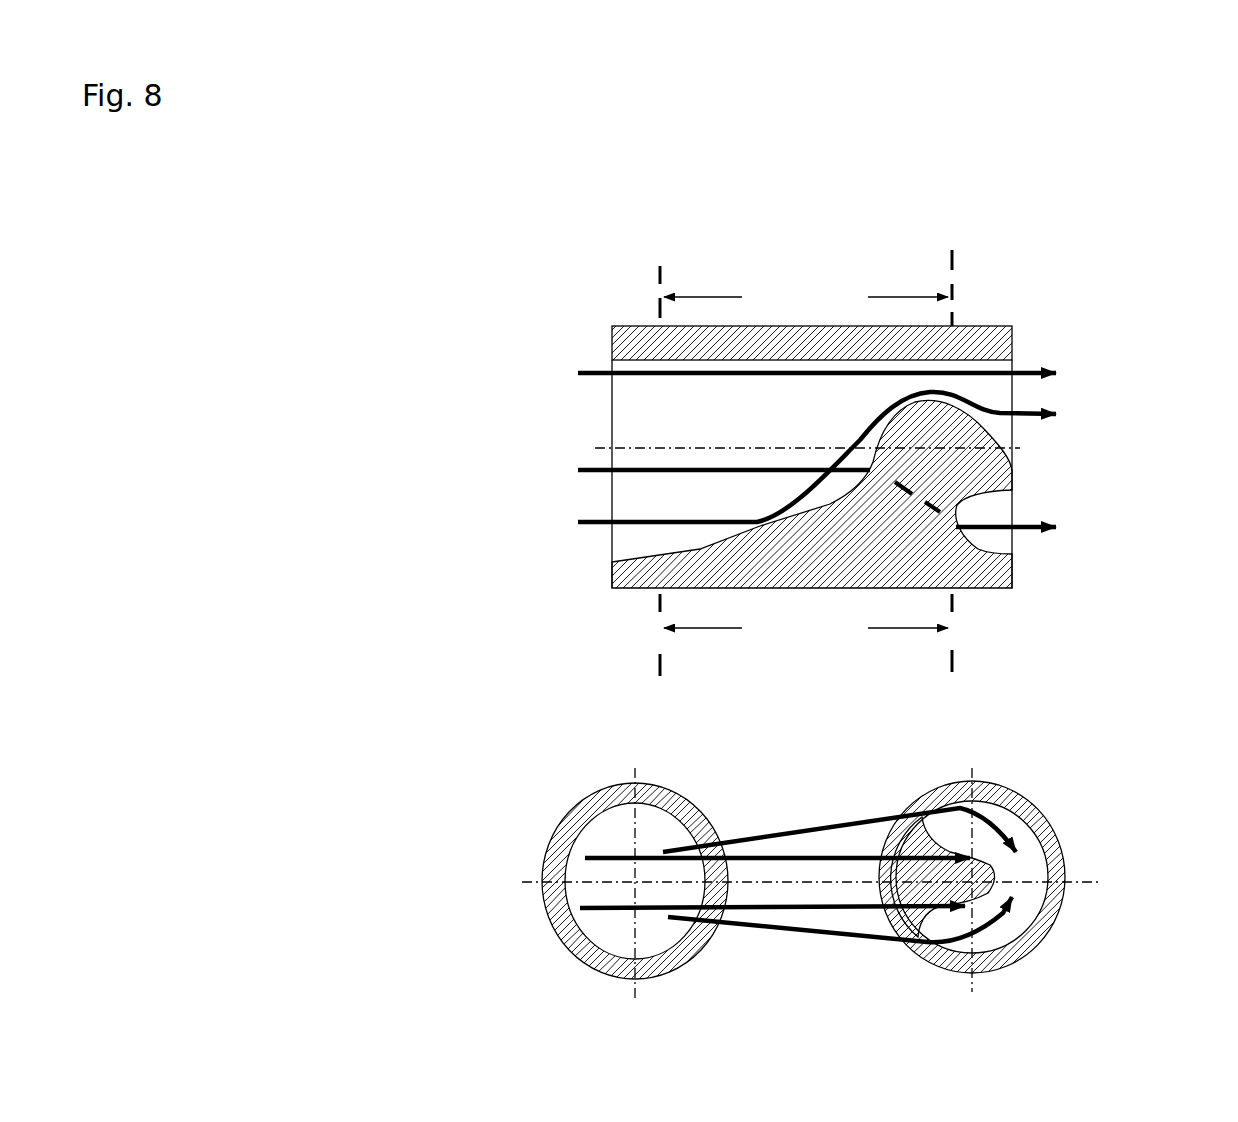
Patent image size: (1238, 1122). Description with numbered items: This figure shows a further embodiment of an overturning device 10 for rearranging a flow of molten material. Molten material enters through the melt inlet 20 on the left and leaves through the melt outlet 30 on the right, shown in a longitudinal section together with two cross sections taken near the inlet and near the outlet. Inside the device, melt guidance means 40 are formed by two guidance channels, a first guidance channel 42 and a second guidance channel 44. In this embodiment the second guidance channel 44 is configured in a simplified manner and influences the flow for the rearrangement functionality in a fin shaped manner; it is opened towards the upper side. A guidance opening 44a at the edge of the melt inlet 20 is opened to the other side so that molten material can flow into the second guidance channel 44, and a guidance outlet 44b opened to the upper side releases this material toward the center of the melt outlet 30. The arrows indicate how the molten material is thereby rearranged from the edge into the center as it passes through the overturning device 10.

The overturning device 10 is at (404, 318).
The melt inlet 20 is at (566, 478).
The melt outlet 30 is at (1104, 497).
The melt guidance means 40 is at (840, 390).
The guidance channel 42 is at (776, 400).
The second guidance channel 44 is at (738, 545).
The guidance opening 44a is at (620, 537).
The guidance outlet 44b is at (1008, 430).